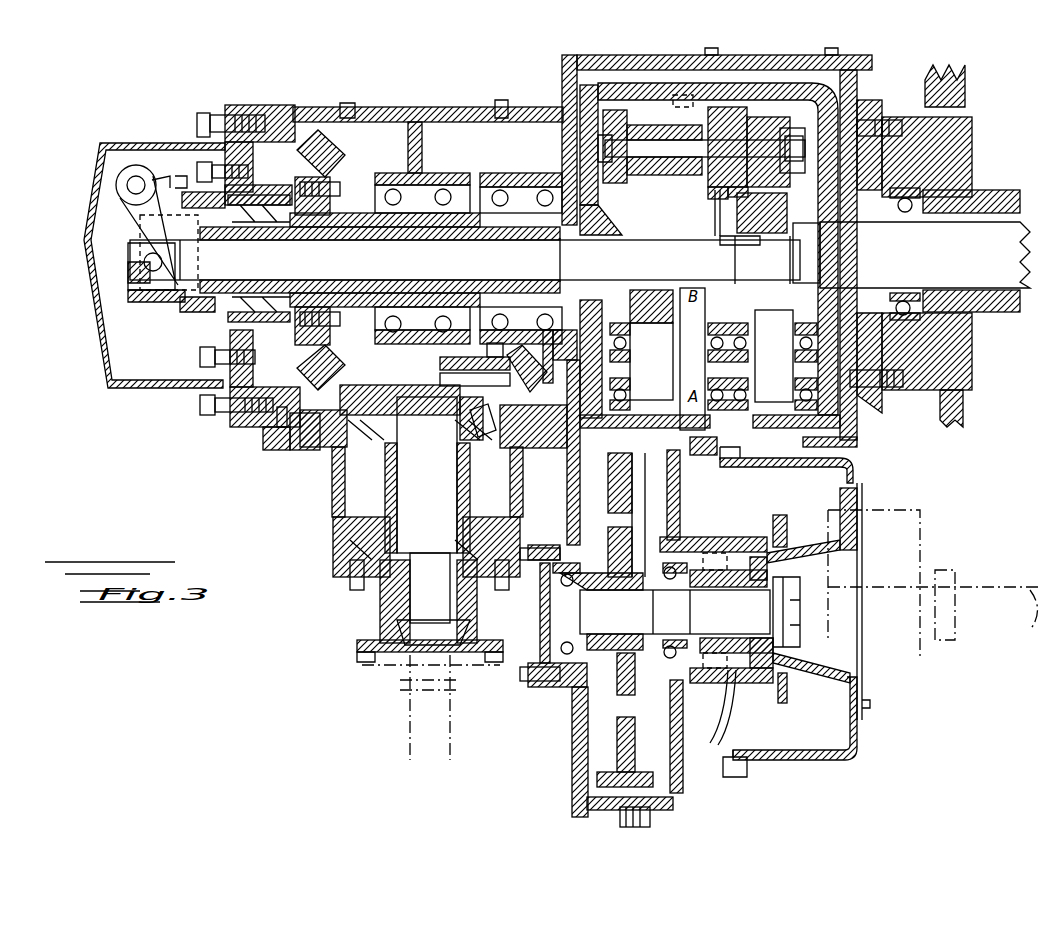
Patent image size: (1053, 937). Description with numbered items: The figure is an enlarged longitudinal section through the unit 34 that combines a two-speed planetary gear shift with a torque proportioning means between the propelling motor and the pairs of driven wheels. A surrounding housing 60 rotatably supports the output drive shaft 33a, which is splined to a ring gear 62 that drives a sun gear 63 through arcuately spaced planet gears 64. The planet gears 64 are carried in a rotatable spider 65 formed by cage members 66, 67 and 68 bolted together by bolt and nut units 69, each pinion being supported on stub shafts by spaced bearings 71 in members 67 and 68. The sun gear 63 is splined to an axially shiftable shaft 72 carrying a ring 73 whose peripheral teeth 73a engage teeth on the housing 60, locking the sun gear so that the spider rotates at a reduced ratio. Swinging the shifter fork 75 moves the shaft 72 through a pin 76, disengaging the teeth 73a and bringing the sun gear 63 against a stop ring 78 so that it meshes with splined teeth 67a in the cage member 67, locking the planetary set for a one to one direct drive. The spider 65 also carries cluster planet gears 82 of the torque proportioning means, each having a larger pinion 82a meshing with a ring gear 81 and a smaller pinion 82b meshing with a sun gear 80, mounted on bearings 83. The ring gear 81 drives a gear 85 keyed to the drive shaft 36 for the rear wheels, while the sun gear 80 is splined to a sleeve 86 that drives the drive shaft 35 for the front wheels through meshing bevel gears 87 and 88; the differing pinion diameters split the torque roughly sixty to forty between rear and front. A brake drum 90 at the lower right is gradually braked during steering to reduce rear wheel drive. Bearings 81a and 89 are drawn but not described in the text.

The output drive shaft 33a is at (911, 251).
The unit 34 is at (322, 506).
The drive shaft 35 is at (408, 727).
The drive shaft 36 is at (998, 640).
The housing 60 is at (560, 68).
The ring gear 62 is at (762, 98).
The sun gear 63 is at (753, 219).
The planet gears 64 is at (774, 356).
The spider 65 is at (708, 186).
The cage member 66 is at (665, 128).
The cage member 67 is at (720, 115).
The splined teeth 67a is at (725, 190).
The cage member 68 is at (776, 152).
The bolt and nut unit 69 is at (701, 148).
The bearings 71 is at (795, 380).
The axially shiftable shaft 72 is at (465, 260).
The ring 73 is at (178, 305).
The peripheral teeth 73a is at (198, 315).
The shifter fork 75 is at (132, 221).
The pin 76 is at (144, 263).
The stop ring 78 is at (714, 209).
The sun gear 80 is at (651, 306).
The ring gear 81 is at (692, 104).
The bearing 81a is at (495, 212).
The planet gears 82 is at (651, 361).
The larger pinion 82a is at (694, 359).
The smaller pinion 82b is at (637, 388).
The bearings 83 is at (628, 342).
The gear 85 is at (630, 500).
The sleeve 86 is at (380, 260).
The bevel gear 87 is at (318, 153).
The bevel gear 88 is at (520, 343).
The bearing 89 is at (715, 363).
The brake drum 90 is at (830, 765).